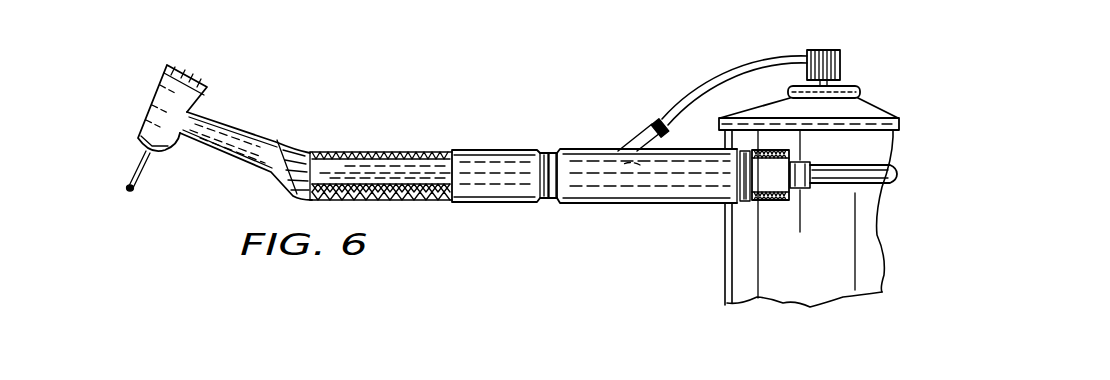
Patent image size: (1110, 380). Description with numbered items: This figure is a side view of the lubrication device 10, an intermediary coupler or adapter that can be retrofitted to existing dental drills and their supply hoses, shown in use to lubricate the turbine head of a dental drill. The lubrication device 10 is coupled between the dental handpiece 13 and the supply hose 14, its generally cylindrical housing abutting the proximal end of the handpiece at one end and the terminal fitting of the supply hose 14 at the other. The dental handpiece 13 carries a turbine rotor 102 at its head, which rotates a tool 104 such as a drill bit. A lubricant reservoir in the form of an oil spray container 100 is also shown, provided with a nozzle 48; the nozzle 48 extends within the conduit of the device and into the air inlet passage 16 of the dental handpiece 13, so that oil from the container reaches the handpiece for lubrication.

The turbine rotor 102 is at (162, 107).
The tool 104 is at (146, 158).
The air inlet passage 16 is at (336, 157).
The dental handpiece 13 is at (437, 152).
The nozzle 48 is at (343, 172).
The lubrication device 10 is at (590, 201).
The oil spray container 100 is at (866, 108).
The supply hose 14 is at (833, 184).